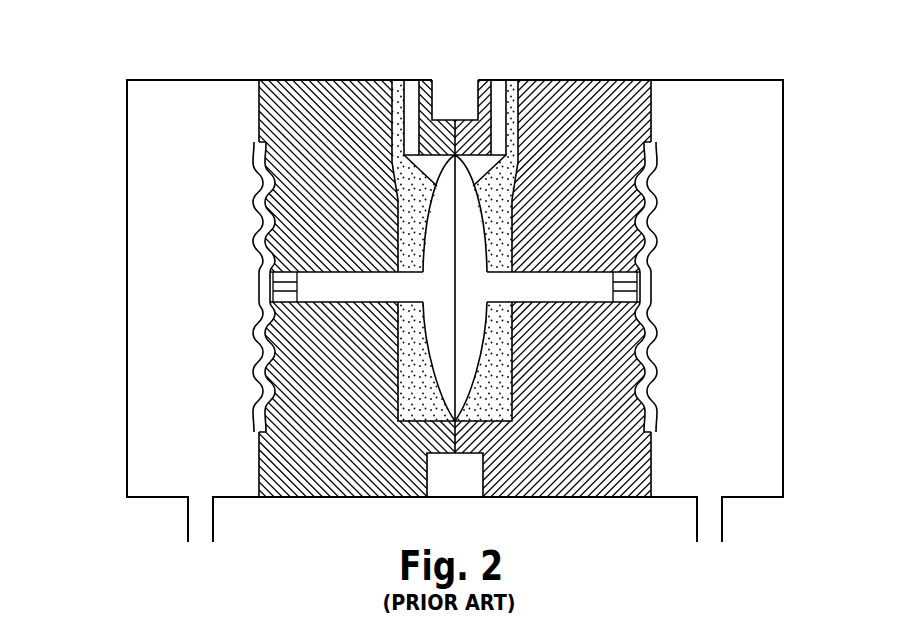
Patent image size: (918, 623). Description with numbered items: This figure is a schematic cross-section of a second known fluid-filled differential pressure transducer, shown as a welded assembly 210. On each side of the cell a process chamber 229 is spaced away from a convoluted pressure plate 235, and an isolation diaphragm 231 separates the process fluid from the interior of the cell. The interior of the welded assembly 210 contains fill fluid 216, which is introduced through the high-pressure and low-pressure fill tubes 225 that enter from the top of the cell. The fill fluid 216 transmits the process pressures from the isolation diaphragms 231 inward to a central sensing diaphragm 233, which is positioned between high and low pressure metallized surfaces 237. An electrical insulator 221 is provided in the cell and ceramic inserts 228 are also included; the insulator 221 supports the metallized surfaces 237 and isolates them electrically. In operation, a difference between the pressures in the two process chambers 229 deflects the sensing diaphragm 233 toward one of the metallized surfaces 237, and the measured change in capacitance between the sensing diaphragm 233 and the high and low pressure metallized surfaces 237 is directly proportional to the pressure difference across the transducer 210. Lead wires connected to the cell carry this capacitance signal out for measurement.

The welded assembly 210 is at (101, 95).
The fill fluid 216 is at (331, 292).
The electrical insulator 221 is at (509, 161).
The high-pressure and low-pressure fill tubes 225 is at (404, 80).
The ceramic inserts 228 is at (273, 285).
The process chambers 229 is at (146, 296).
The isolation diaphragms 231 is at (265, 222).
The sensing diaphragm 233 is at (452, 333).
The convoluted pressure plates 235 is at (263, 318).
The high and low pressure metallized surfaces 237 is at (470, 373).